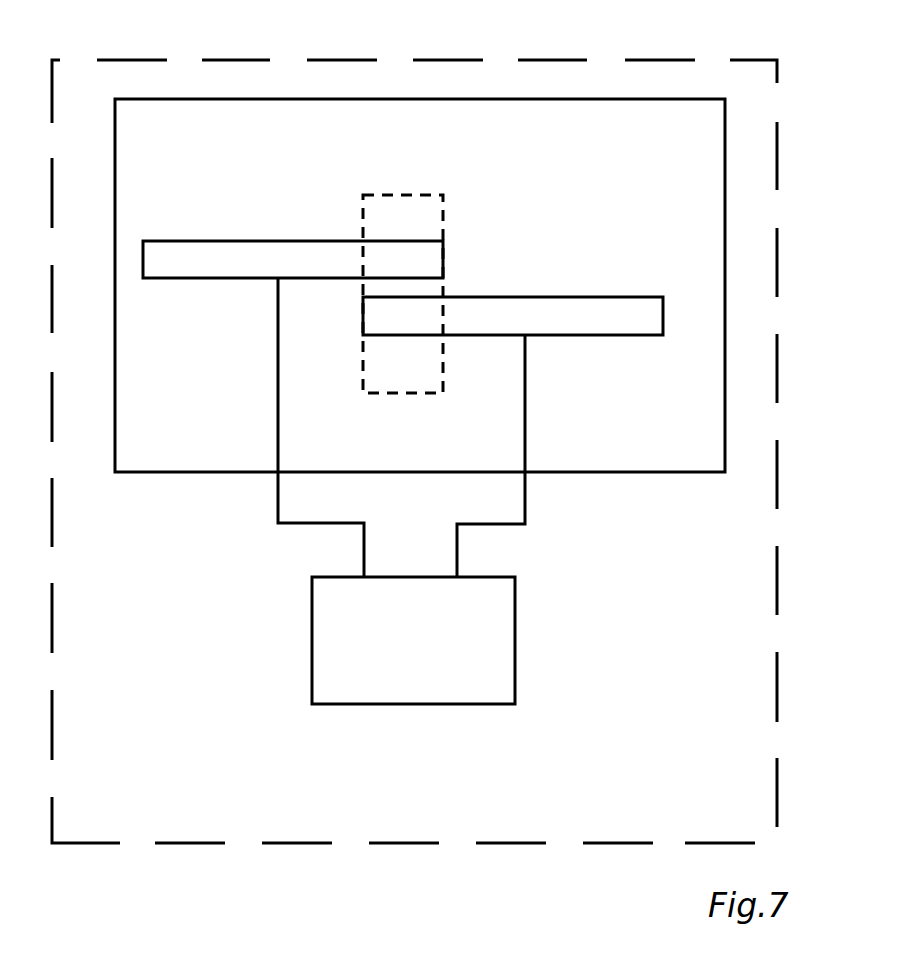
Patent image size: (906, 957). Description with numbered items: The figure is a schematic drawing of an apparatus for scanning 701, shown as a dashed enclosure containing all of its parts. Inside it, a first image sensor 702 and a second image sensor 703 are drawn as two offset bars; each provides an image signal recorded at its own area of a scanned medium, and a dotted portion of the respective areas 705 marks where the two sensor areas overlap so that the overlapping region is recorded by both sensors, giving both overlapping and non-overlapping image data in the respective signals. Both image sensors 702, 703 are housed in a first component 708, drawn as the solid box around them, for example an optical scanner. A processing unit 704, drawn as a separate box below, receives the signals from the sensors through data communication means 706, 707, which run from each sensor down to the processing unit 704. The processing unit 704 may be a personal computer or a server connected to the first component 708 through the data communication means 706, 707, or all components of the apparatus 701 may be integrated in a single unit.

The apparatus for scanning 701 is at (688, 60).
The first image sensor 702 is at (225, 240).
The second image sensor 703 is at (618, 297).
The processing unit 704 is at (410, 704).
The portion of the respective areas 705 is at (400, 195).
The data communication means 706 is at (280, 443).
The data communication means 707 is at (527, 447).
The first component 708 is at (213, 472).